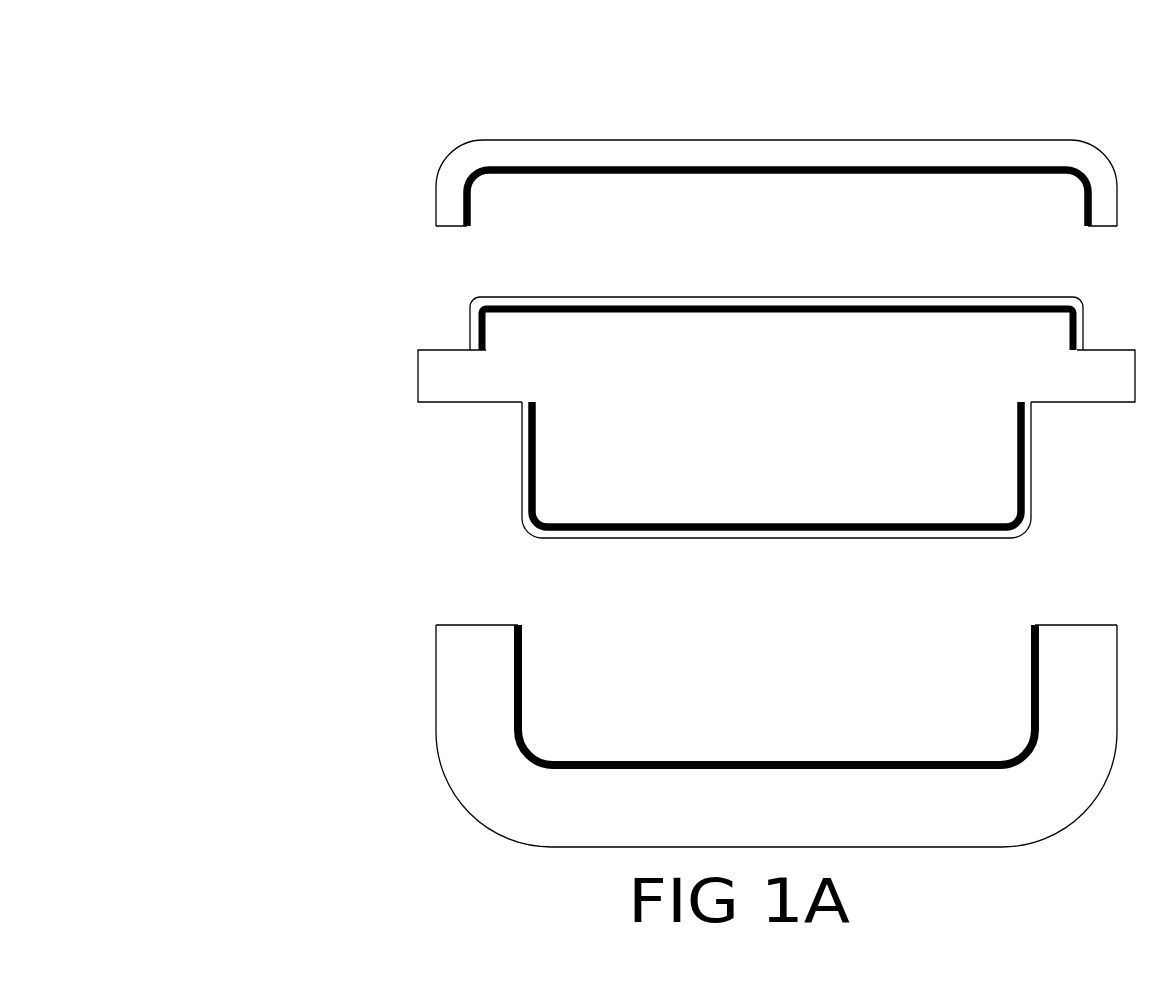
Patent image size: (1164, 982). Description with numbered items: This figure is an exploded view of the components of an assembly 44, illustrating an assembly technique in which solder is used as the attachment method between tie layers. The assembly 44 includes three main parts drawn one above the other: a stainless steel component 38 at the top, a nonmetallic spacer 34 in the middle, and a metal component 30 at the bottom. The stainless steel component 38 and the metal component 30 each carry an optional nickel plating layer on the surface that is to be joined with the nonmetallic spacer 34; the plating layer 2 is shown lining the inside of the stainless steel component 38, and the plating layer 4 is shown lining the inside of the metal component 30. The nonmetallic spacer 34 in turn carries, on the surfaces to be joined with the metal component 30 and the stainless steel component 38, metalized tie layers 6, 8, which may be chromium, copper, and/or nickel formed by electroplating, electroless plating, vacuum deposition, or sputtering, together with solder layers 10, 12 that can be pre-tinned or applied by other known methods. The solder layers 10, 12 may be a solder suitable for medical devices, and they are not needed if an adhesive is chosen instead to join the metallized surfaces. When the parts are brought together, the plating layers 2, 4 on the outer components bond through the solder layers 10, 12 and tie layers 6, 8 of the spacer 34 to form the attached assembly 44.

The assembly 44 is at (567, 108).
The stainless steel component 38 is at (818, 142).
The nickel plating layer 2 is at (467, 207).
The nonmetallic spacer 34 is at (794, 455).
The solder layer 10 is at (471, 310).
The metalized tie layer 6 is at (483, 330).
The metalized tie layer 8 is at (537, 451).
The solder layer 12 is at (530, 527).
The metal component 30 is at (793, 823).
The nickel plating layer 4 is at (520, 708).